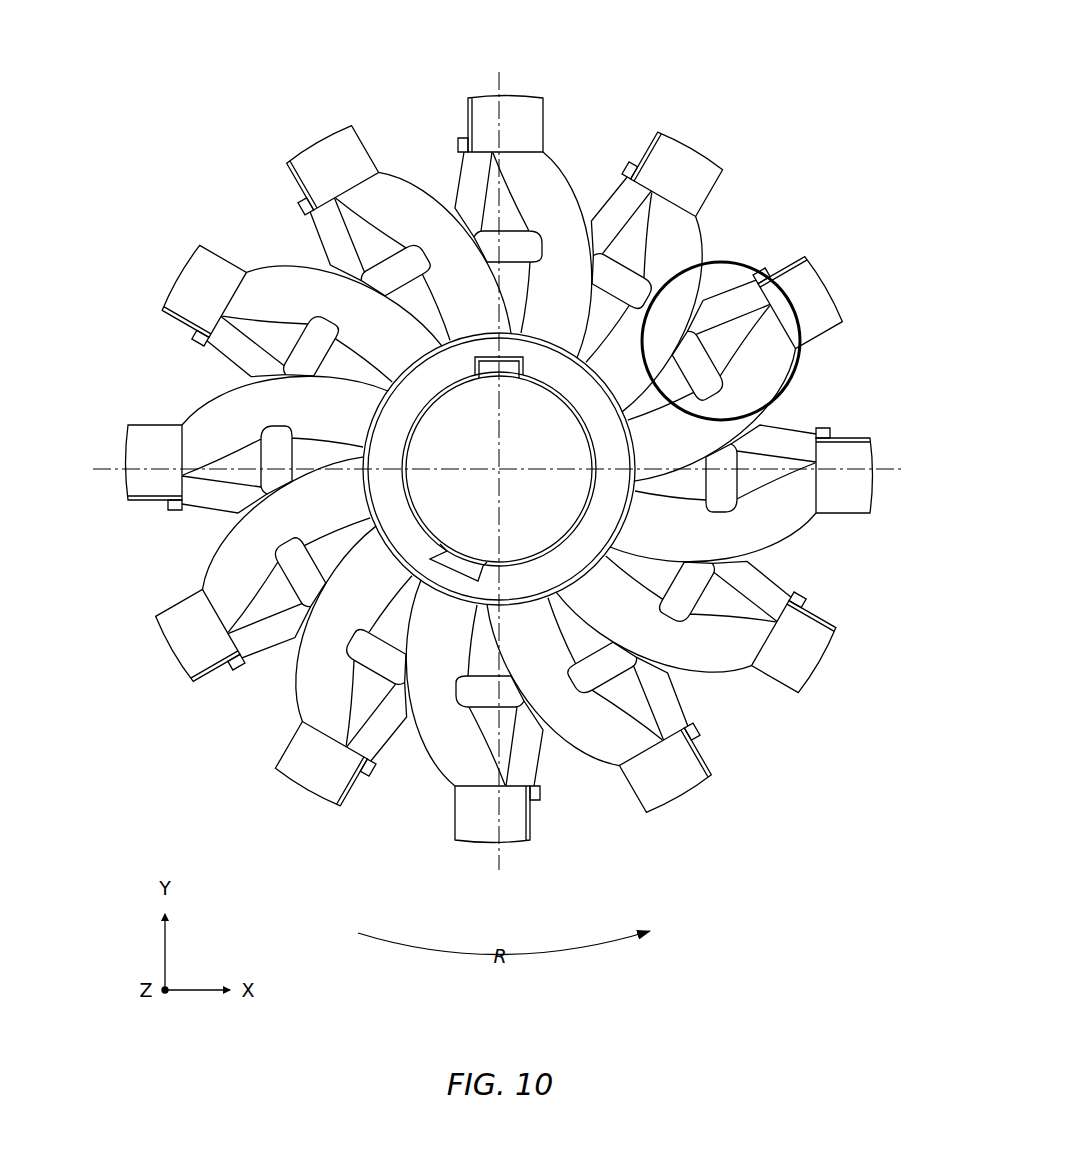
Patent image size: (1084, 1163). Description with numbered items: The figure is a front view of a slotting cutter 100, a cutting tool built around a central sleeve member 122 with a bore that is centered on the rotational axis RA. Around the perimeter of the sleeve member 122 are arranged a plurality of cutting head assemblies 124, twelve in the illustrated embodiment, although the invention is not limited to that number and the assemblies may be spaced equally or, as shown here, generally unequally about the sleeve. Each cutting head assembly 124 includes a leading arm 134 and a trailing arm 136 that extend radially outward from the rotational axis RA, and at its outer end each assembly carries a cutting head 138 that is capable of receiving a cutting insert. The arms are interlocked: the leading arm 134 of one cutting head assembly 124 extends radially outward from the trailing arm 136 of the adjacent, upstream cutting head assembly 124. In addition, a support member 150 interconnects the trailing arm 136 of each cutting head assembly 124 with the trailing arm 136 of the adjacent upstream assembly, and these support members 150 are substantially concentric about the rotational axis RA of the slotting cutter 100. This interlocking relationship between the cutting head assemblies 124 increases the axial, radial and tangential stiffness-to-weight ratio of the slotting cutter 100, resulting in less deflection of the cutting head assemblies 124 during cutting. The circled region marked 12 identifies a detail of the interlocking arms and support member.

The slotting cutter 100 is at (180, 106).
The detail region 12 is at (778, 280).
The sleeve member 122 is at (358, 487).
The cutting head assembly 124 is at (330, 124).
The leading arm 134 is at (606, 192).
The trailing arm 136 is at (716, 210).
The cutting head 138 is at (296, 148).
The support member 150 is at (690, 376).
The rotational axis RA is at (500, 468).